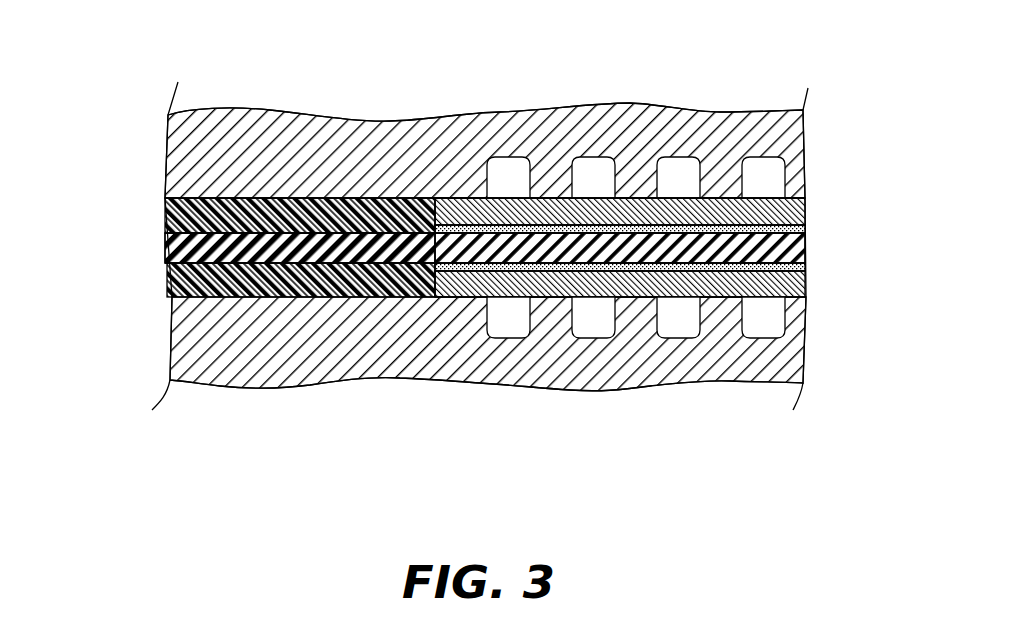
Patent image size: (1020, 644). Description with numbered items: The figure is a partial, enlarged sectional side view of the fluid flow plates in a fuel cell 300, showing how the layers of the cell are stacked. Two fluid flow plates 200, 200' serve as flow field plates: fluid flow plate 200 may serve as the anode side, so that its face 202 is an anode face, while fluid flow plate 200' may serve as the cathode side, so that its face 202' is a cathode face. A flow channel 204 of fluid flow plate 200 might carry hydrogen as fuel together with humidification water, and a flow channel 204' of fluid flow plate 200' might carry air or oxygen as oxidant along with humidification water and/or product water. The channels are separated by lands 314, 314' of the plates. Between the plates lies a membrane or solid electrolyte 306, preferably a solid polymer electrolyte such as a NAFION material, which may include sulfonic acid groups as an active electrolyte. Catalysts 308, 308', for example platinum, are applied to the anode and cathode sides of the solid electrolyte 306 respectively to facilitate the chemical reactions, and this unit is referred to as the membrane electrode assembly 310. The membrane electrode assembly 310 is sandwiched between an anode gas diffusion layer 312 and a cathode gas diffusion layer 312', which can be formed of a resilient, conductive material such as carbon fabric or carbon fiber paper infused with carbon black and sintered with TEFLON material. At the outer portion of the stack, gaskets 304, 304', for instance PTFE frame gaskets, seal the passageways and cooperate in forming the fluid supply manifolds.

The fuel cell 300 is at (915, 60).
The fluid flow plate 200 is at (479, 380).
The fluid flow plate 200' is at (486, 115).
The face 202 is at (620, 380).
The face 202' is at (620, 115).
The flow channel 204 is at (636, 380).
The flow channel 204' is at (636, 115).
The land of lower plate 314 is at (529, 380).
The land of upper plate 314' is at (532, 115).
The gasket 304 is at (241, 298).
The gasket 304' is at (240, 198).
The solid electrolyte 306 is at (787, 242).
The catalyst 308 is at (675, 279).
The catalyst 308' is at (677, 211).
The membrane electrode assembly 310 is at (812, 257).
The gas diffusion layer 312 is at (675, 300).
The gas diffusion layer 312' is at (677, 178).